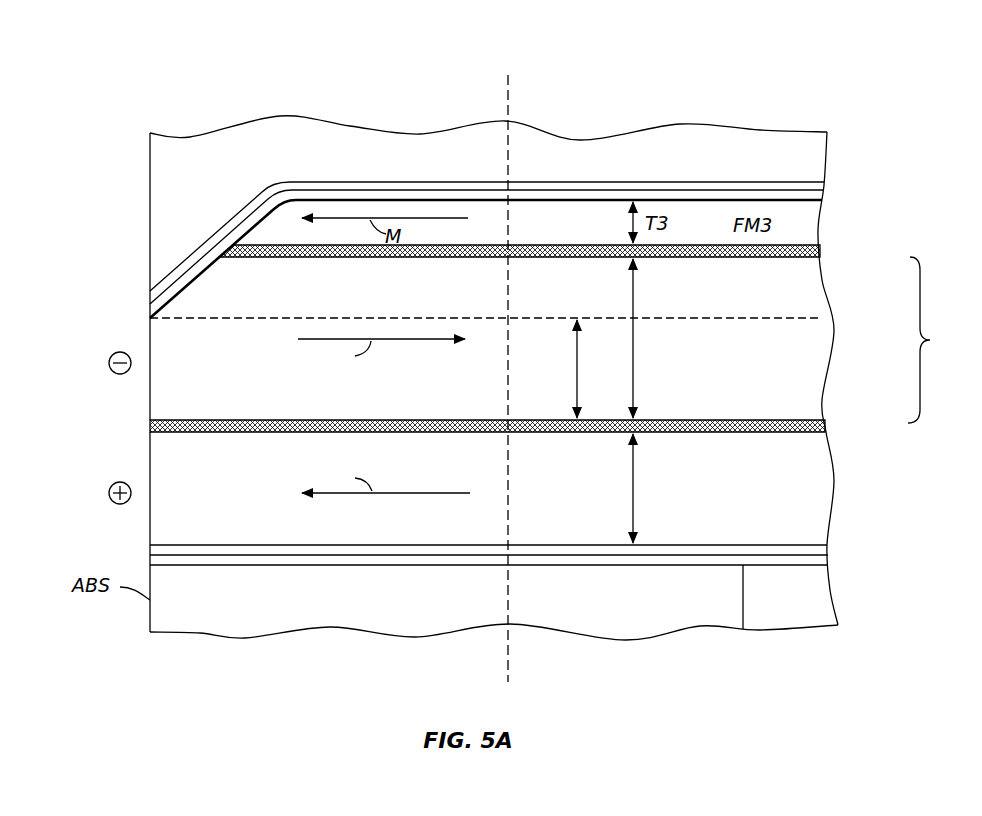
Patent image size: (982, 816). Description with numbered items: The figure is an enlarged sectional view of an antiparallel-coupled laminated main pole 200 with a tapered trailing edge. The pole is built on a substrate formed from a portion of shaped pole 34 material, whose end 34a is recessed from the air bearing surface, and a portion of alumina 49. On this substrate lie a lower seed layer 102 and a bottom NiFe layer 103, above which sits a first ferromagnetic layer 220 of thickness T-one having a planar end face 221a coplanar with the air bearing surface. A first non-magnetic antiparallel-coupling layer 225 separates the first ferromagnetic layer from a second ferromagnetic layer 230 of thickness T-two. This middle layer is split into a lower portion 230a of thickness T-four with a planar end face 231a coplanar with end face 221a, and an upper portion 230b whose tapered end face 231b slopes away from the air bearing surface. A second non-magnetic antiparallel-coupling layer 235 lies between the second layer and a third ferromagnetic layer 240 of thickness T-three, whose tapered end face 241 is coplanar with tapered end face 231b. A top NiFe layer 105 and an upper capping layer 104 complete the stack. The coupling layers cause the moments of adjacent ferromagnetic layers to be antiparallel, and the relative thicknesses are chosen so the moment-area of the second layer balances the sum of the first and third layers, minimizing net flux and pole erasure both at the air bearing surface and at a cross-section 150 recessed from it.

The antiparallel-coupled laminated main pole 200 is at (781, 81).
The upper capping layer 104 is at (826, 183).
The top NiFe layer 105 is at (825, 195).
The third ferromagnetic layer (FM3) 240 is at (814, 228).
The tapered end face of FM3 241 is at (258, 230).
The second non-magnetic antiparallel-coupling layer (APC2) 235 is at (822, 251).
The second ferromagnetic layer (FM2) 230 is at (803, 340).
The upper portion of FM2 230b is at (823, 293).
The lower portion of FM2 230a is at (823, 373).
The planar end face of FM2 lower portion 231a is at (150, 395).
The tapered end face of FM2 upper portion 231b is at (178, 295).
The first non-magnetic antiparallel-coupling layer (APC1) 225 is at (824, 428).
The first ferromagnetic layer (FM1) 220 is at (833, 480).
The planar end face of FM1 221a is at (150, 523).
The bottom NiFe layer 103 is at (827, 551).
The lower seed layer 102 is at (828, 562).
The shaped pole 34 is at (829, 597).
The end of shaped pole 34a is at (743, 610).
The alumina portion of substrate 49 is at (200, 622).
The recessed cross-section 150 is at (508, 662).